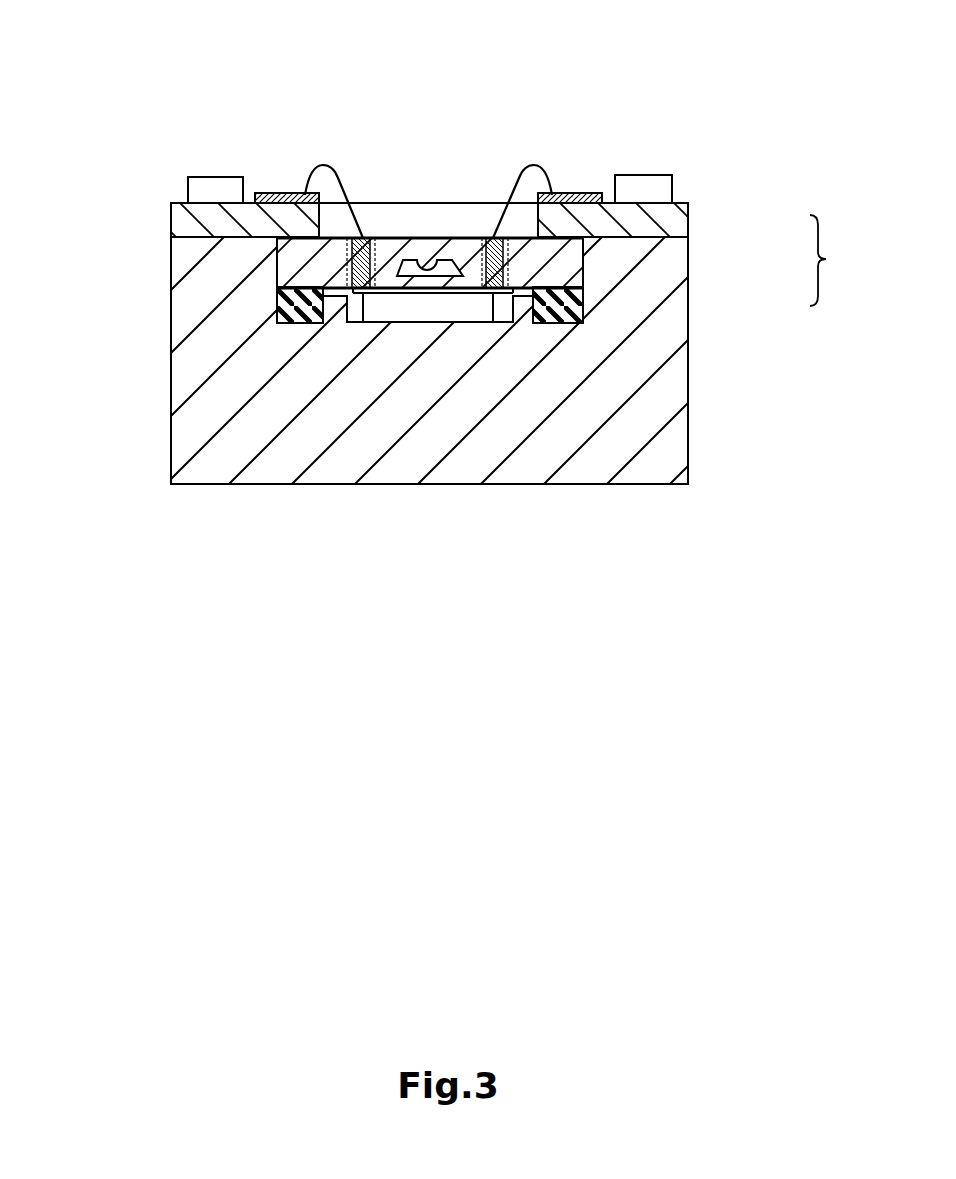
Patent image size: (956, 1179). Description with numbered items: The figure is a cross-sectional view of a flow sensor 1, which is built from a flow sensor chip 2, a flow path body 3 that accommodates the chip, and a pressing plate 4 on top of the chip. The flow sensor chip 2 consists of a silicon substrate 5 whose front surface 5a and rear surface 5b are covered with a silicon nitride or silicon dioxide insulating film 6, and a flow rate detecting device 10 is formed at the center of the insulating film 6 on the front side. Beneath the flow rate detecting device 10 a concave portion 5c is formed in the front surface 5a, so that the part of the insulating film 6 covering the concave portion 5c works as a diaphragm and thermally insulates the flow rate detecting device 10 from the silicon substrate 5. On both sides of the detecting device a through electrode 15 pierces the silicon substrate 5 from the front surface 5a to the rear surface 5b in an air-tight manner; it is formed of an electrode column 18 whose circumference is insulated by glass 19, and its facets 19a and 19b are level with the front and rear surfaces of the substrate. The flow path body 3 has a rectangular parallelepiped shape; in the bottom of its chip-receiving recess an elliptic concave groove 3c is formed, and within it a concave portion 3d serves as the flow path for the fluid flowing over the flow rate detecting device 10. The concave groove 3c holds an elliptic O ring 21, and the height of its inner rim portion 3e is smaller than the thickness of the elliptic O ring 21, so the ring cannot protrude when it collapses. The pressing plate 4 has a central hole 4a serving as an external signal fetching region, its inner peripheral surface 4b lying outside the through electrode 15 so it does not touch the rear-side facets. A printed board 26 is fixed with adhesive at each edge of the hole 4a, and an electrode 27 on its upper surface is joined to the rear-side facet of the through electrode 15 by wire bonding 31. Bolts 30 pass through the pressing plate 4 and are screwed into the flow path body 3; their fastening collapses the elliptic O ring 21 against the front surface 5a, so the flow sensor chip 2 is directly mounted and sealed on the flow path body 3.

The flow sensor 1 is at (130, 63).
The flow sensor chip 2 is at (392, 295).
The flow path body 3 is at (160, 478).
The concave groove 3c is at (555, 335).
The concave portion (flow path) 3d is at (440, 322).
The inner rim portion 3e is at (533, 323).
The pressing plate 4 is at (177, 186).
The hole 4a is at (333, 219).
The inner peripheral surface 4b is at (535, 225).
The silicon substrate 5 is at (277, 283).
The front surface 5a is at (470, 300).
The rear surface 5b is at (455, 238).
The concave portion 5c is at (432, 258).
The insulating film 6 is at (300, 250).
The flow rate detecting device 10 is at (410, 308).
The through electrode 15 is at (835, 260).
The electrode column 18 is at (583, 246).
The glass 19 is at (585, 277).
The facet 19a is at (360, 290).
The facet 19b is at (363, 238).
The elliptic O ring 21 is at (585, 305).
The printed board 26 is at (260, 195).
The electrode 27 is at (297, 190).
The bolt 30 is at (208, 177).
The wire bonding 31 is at (345, 167).